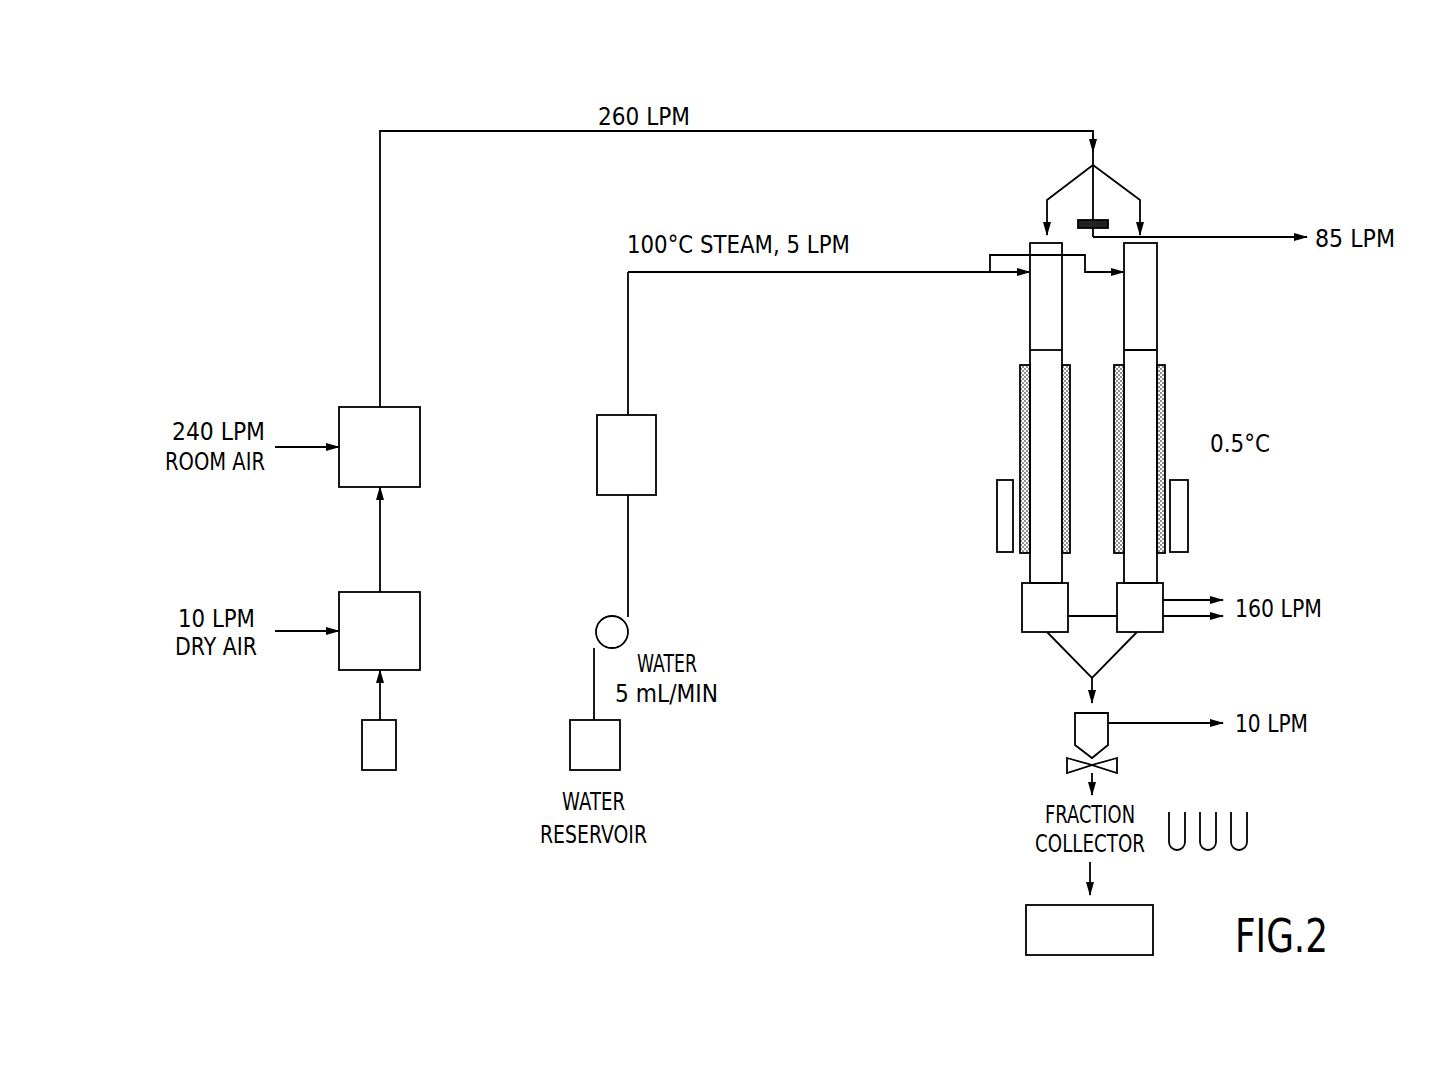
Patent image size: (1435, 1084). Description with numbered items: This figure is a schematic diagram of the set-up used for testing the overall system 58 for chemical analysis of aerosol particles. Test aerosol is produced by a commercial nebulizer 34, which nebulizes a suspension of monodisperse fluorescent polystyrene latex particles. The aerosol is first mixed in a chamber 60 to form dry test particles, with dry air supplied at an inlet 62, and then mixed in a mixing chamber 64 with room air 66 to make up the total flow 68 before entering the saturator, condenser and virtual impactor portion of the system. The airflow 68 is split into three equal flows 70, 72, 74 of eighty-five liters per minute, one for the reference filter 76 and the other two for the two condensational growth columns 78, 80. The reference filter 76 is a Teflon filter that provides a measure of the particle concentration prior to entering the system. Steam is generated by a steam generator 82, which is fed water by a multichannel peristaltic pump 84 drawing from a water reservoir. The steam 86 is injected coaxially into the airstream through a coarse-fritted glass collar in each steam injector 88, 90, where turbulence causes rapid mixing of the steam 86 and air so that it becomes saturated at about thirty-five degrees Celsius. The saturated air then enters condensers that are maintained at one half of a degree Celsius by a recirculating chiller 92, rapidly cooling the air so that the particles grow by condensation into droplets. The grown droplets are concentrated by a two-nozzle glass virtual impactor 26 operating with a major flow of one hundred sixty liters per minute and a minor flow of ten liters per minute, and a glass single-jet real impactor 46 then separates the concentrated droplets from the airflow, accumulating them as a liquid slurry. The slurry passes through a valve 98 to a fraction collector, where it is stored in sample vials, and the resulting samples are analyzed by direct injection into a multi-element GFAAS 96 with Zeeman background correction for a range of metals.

The virtual impactor 26 is at (1030, 612).
The nebulizer 34 is at (388, 748).
The real impactor 46 is at (1082, 733).
The overall system 58 is at (1312, 463).
The chamber 60 is at (403, 636).
The dry air inlet 62 is at (298, 633).
The mixing chamber 64 is at (403, 450).
The room air 66 is at (296, 447).
The total flow 68 is at (380, 300).
The flow 70 is at (1057, 192).
The flow 72 is at (1103, 167).
The flow 74 is at (1115, 182).
The reference filter 76 is at (1108, 228).
The condensational growth column 78 is at (995, 330).
The condensational growth column 80 is at (1172, 334).
The steam generator 82 is at (636, 450).
The peristaltic pump 84 is at (606, 628).
The steam 86 is at (628, 358).
The steam injector 88 is at (1038, 333).
The steam injector 90 is at (1147, 295).
The recirculating chiller 92 is at (997, 523).
The multi-element GFAAS 96 is at (1153, 935).
The valve 98 is at (1117, 765).